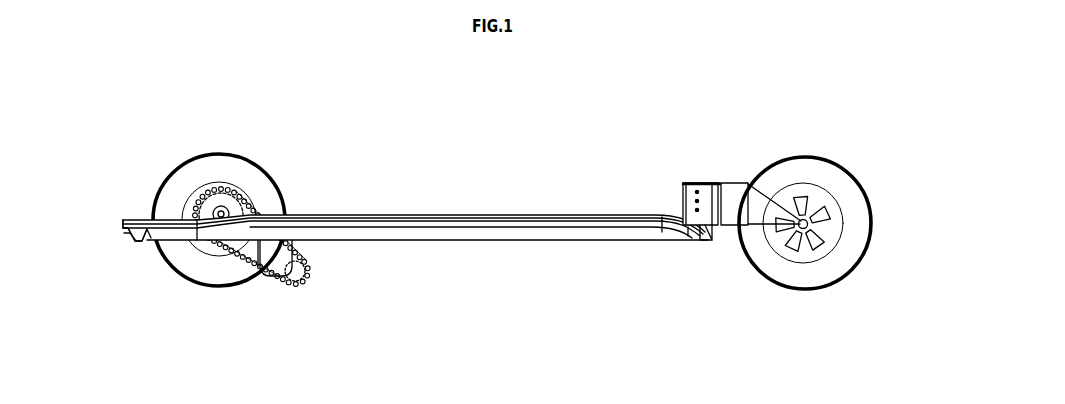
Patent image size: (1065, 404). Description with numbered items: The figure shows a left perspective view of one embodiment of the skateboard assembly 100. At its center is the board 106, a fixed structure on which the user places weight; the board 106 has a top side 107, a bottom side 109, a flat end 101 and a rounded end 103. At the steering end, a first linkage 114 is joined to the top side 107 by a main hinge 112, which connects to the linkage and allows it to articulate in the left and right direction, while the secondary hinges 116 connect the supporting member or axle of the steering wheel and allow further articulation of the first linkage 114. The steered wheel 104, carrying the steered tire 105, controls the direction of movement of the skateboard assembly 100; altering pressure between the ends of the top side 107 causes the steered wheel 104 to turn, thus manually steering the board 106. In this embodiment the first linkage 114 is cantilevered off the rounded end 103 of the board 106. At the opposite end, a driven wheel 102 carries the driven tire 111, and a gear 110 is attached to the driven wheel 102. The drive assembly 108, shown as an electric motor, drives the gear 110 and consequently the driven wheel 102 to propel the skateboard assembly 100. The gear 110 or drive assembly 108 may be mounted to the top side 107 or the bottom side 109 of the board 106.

The skateboard assembly 100 is at (477, 105).
The flat end 101 is at (702, 238).
The driven wheel 102 is at (148, 202).
The rounded end 103 is at (130, 238).
The steered wheel 104 is at (875, 242).
The steered tire 105 is at (837, 224).
The board 106 is at (478, 233).
The top side 107 is at (505, 215).
The drive assembly 108 is at (273, 260).
The bottom side 109 is at (548, 243).
The gear 110 is at (303, 277).
The driven tire 111 is at (200, 190).
The hinge 112 is at (702, 178).
The first linkage 114 is at (735, 210).
The secondary hinges 116 is at (820, 242).